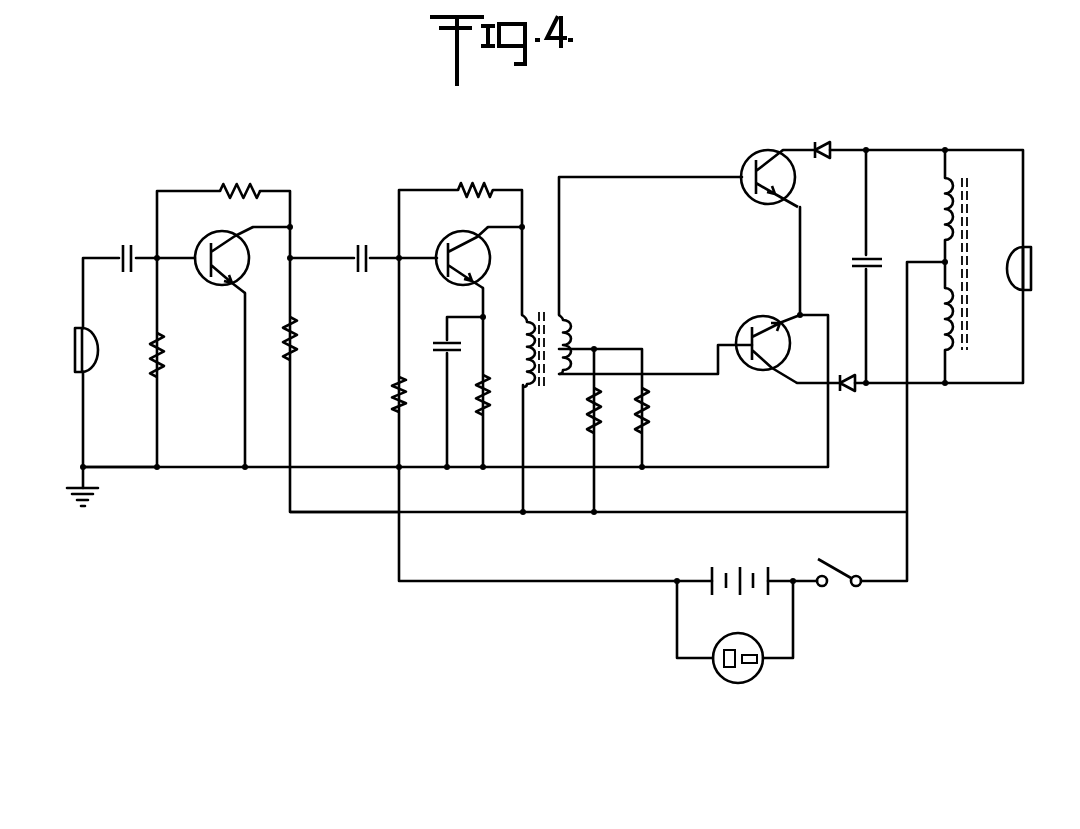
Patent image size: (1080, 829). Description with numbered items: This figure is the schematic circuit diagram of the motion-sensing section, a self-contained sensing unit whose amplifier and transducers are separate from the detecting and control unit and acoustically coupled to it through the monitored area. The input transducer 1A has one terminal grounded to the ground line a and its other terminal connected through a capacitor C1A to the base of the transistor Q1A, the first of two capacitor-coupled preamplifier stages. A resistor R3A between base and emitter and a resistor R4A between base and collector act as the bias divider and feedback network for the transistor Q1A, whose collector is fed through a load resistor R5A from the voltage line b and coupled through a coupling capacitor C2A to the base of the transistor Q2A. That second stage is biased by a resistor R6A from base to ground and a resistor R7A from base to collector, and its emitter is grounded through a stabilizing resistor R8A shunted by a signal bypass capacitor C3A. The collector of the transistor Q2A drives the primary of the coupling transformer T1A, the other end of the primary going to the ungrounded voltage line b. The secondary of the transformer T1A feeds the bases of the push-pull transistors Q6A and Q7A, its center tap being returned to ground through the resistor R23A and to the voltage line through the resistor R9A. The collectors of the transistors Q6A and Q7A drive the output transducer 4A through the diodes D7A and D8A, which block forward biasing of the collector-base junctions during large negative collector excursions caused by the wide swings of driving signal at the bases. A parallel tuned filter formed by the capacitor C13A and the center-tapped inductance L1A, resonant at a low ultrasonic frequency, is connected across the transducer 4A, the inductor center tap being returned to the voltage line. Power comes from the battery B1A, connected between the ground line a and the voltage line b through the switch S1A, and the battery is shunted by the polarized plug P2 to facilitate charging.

The input transducer 1A is at (75, 348).
The capacitor C1A is at (122, 248).
The resistor R4A is at (242, 183).
The transistor Q1A is at (236, 232).
The resistor R3A is at (164, 356).
The load resistor R5A is at (297, 340).
The coupling capacitor C2A is at (366, 237).
The resistor R7A is at (483, 169).
The transistor Q2A is at (480, 232).
The signal bypass capacitor C3A is at (430, 350).
The resistor R6A is at (394, 392).
The stabilizing resistor R8A is at (476, 388).
The coupling transformer T1A is at (546, 339).
The resistor R9A is at (588, 398).
The resistor R23A is at (652, 412).
The transistor Q6A is at (785, 145).
The transistor Q7A is at (780, 318).
The diode D7A is at (826, 142).
The diode D8A is at (846, 392).
The capacitor C13A is at (886, 256).
The center-tapped inductance L1A is at (957, 232).
The output transducer 4A is at (1031, 268).
The powering battery B1A is at (740, 565).
The switch S1A is at (840, 566).
The polarized plug P2 is at (724, 682).
The ground line a is at (113, 476).
The voltage line b is at (298, 525).